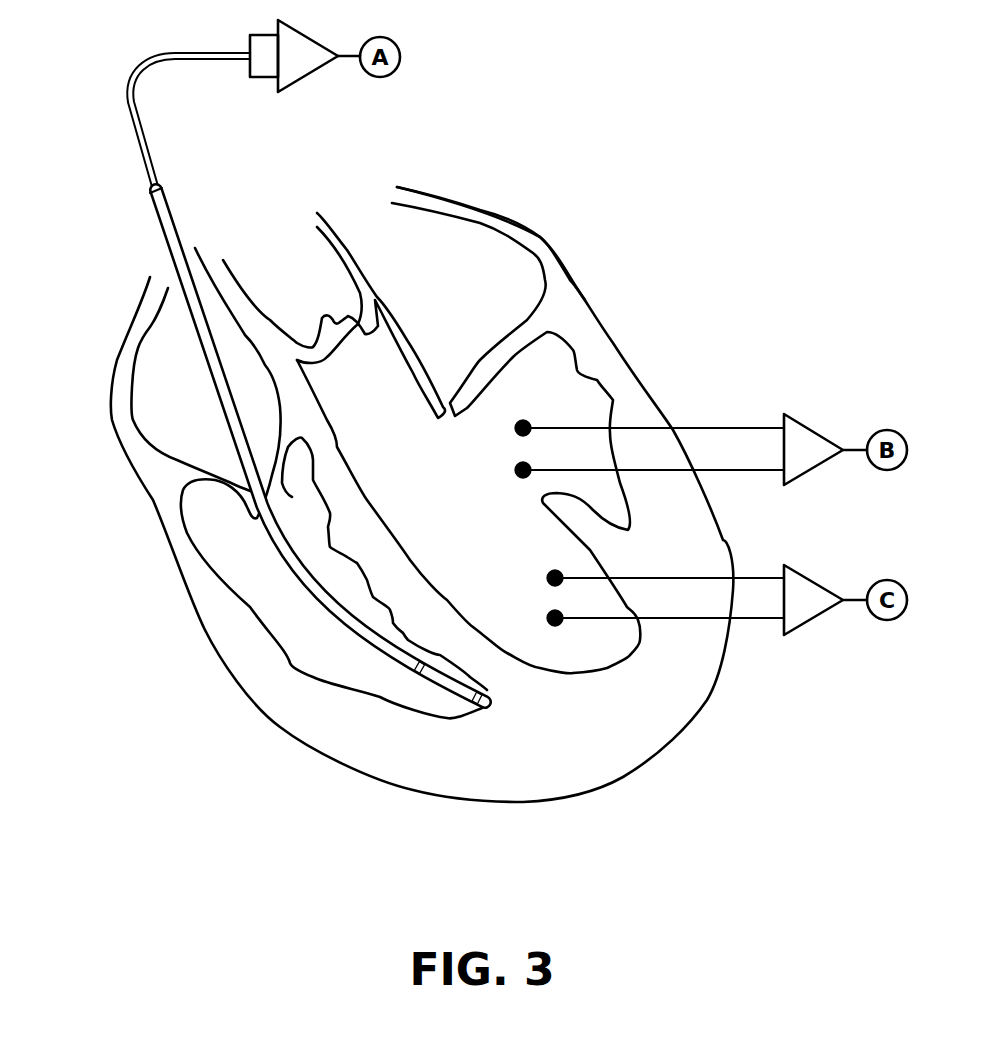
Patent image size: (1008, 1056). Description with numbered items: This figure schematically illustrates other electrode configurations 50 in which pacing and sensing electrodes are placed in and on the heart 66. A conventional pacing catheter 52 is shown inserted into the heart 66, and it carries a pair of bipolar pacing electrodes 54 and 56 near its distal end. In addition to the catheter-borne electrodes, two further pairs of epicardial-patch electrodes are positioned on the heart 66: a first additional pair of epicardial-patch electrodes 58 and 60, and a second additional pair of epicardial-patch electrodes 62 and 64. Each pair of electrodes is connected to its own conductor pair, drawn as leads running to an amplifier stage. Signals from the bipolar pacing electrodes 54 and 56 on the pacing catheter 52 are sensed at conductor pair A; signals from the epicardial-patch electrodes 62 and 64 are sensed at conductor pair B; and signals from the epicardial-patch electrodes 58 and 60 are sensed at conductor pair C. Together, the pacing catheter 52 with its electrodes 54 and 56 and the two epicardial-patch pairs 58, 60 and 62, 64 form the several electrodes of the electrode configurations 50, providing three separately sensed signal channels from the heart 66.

The electrode configurations 50 is at (575, 118).
The pacing catheter 52 is at (162, 247).
The bipolar pacing electrode 54 is at (473, 708).
The bipolar pacing electrode 56 is at (418, 675).
The epicardial-patch electrode 58 is at (550, 613).
The epicardial-patch electrode 60 is at (550, 575).
The epicardial-patch electrode 62 is at (515, 472).
The epicardial-patch electrode 64 is at (515, 432).
The heart 66 is at (542, 238).